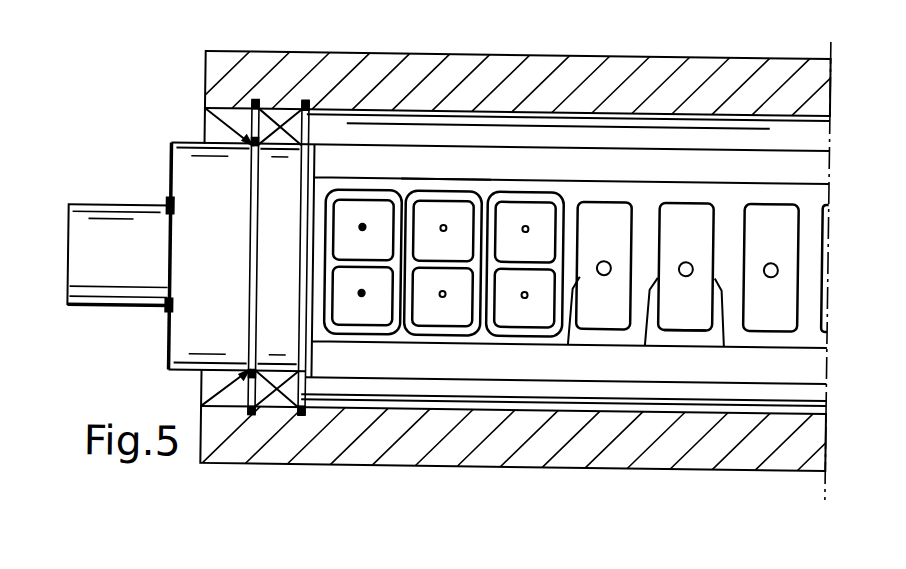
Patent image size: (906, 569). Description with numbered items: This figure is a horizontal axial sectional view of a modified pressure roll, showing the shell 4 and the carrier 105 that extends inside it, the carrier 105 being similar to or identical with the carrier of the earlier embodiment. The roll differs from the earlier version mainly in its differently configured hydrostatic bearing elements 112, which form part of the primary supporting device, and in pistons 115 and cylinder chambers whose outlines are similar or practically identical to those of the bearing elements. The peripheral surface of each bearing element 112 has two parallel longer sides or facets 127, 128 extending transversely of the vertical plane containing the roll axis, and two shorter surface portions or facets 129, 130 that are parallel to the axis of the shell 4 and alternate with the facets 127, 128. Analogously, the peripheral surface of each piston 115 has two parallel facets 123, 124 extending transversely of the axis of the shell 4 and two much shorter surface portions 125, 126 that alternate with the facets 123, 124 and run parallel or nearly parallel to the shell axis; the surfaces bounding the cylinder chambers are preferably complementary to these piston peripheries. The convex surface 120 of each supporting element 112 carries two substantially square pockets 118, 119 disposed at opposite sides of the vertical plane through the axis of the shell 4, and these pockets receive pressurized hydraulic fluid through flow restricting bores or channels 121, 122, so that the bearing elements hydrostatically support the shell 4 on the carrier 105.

The shell 4 is at (755, 82).
The carrier 105 is at (642, 198).
The hydrostatic bearing element 112 is at (442, 172).
The piston 115 is at (683, 298).
The pocket 118 is at (339, 215).
The pocket 119 is at (339, 305).
The convex surface 120 is at (392, 332).
The flow restricting bore 121 is at (362, 229).
The flow restricting bore 122 is at (362, 295).
The facet 123 is at (652, 278).
The facet 124 is at (724, 287).
The surface portion 125 is at (686, 201).
The surface portion 126 is at (704, 328).
The longer side 127 is at (484, 288).
The longer side 128 is at (572, 299).
The shorter surface portion 129 is at (536, 190).
The shorter surface portion 130 is at (529, 332).